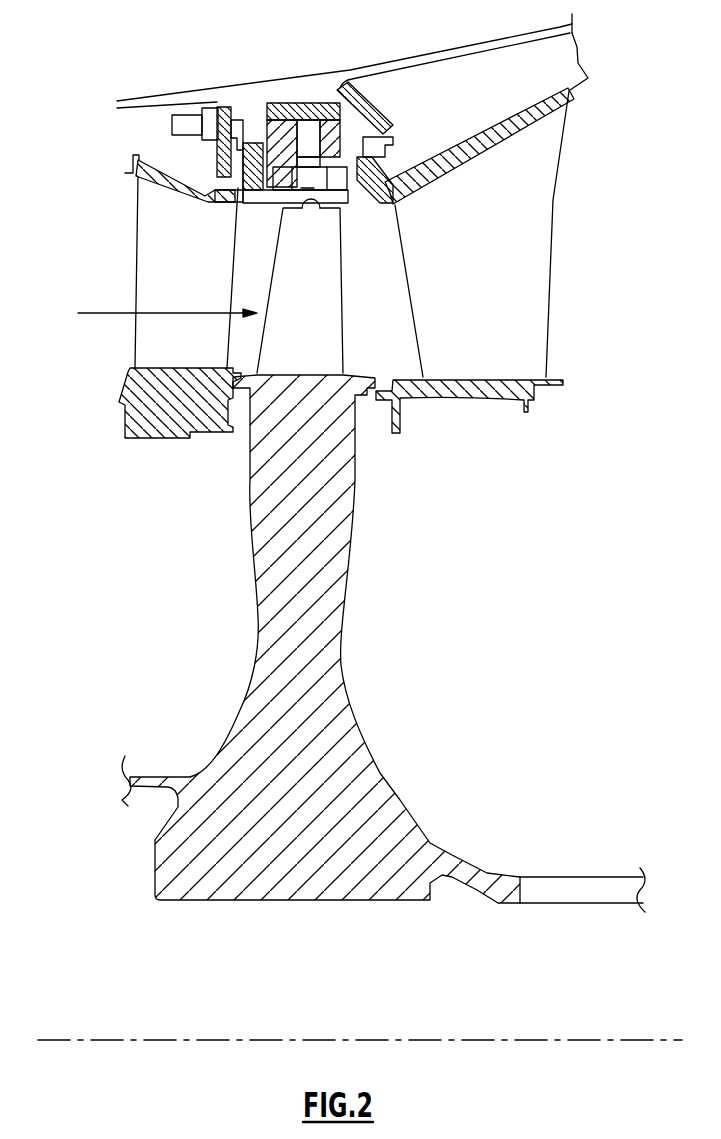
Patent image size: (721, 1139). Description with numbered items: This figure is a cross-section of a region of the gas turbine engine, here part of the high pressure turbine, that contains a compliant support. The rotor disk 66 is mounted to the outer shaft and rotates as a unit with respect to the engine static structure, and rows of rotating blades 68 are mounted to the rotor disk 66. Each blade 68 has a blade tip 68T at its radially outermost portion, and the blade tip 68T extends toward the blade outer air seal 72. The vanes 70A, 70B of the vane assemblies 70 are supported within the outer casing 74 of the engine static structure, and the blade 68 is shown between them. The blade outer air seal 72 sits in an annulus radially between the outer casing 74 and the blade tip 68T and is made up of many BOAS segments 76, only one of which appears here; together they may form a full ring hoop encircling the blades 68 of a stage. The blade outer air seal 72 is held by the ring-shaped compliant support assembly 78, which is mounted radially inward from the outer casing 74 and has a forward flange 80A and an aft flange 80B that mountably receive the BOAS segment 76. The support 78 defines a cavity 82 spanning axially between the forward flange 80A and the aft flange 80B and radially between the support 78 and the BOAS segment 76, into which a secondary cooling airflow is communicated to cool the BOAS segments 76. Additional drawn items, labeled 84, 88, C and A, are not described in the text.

The rotor disk 66 is at (365, 762).
The blade 68 is at (315, 331).
The blade tip 68T is at (319, 203).
The vane assemblies 70 is at (138, 414).
The vane 70A is at (189, 271).
The vane 70B is at (504, 273).
The blade outer air seal (BOAS) 72 is at (273, 195).
The outer casing 74 is at (317, 88).
The BOAS segment 76 is at (248, 168).
The compliant support assembly 78 is at (259, 188).
The forward flange 80A is at (277, 142).
The aft flange 80B is at (370, 150).
The cavity 82 is at (357, 180).
The seal support bar 84 is at (290, 104).
The diagonal support member 88 is at (340, 134).
The core flow direction C is at (159, 315).
The engine central axis A is at (578, 1041).